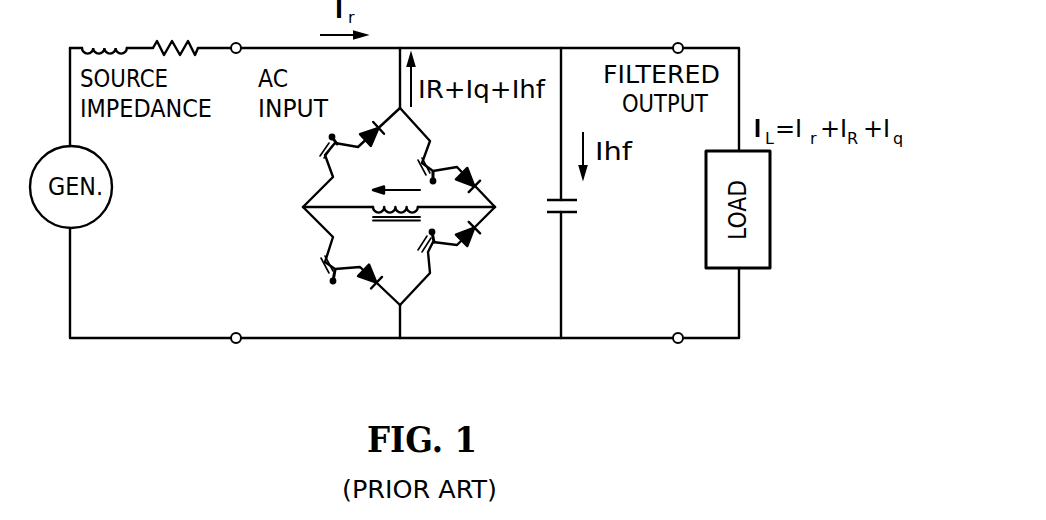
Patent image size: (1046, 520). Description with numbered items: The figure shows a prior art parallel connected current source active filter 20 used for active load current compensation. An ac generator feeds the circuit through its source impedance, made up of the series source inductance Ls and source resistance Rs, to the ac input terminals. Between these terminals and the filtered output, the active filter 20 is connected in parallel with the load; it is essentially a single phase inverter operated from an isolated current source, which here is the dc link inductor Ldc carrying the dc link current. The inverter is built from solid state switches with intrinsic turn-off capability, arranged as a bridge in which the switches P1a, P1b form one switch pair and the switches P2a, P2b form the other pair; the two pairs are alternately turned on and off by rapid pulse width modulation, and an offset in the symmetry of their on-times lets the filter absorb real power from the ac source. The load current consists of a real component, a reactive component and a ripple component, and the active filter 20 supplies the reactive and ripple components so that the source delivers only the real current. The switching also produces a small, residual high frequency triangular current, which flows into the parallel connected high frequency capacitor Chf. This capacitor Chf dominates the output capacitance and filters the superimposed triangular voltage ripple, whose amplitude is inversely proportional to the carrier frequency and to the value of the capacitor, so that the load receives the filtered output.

The parallel connected current source active filter 20 is at (341, 206).
The switch P1a is at (336, 157).
The switch P2a is at (447, 157).
The switch P1b is at (447, 256).
The switch P2b is at (340, 256).
The source inductance Ls is at (104, 32).
The source resistance Rs is at (175, 33).
The dc link inductor Ldc is at (393, 228).
The high frequency capacitor Chf is at (585, 214).